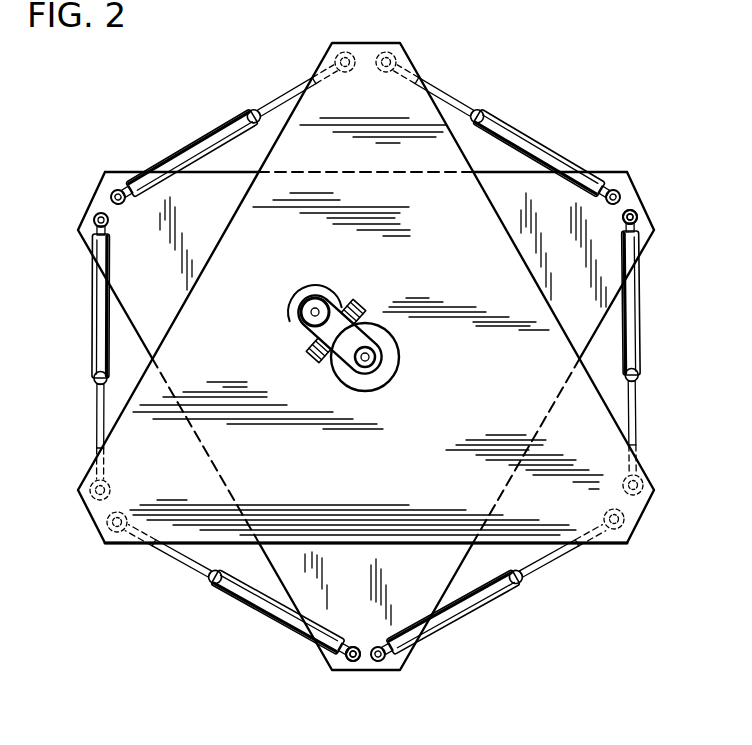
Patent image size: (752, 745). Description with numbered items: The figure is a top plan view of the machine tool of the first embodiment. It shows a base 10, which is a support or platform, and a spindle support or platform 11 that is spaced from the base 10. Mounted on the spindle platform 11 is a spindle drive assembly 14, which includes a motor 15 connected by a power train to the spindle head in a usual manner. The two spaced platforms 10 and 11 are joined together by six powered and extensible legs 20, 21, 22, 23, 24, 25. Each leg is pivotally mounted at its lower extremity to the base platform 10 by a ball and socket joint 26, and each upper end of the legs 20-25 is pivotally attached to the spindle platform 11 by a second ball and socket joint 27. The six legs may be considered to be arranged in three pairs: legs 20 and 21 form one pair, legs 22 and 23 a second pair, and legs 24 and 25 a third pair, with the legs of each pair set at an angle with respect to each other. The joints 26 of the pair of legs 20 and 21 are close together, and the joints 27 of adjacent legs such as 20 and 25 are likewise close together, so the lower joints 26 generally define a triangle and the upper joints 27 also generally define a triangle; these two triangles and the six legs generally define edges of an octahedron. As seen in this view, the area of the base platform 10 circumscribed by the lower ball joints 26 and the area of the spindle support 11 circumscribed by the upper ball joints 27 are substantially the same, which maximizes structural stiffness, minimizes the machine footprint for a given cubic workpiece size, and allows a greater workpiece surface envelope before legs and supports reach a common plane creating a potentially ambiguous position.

The base 10 is at (397, 579).
The spindle platform 11 is at (494, 383).
The spindle drive assembly 14 is at (484, 737).
The motor 15 is at (307, 293).
The extensible leg 20 is at (96, 312).
The extensible leg 21 is at (211, 127).
The extensible leg 22 is at (533, 137).
The extensible leg 23 is at (638, 330).
The extensible leg 24 is at (473, 615).
The extensible leg 25 is at (260, 617).
The ball and socket joint 26 is at (640, 214).
The second ball and socket joint 27 is at (114, 548).